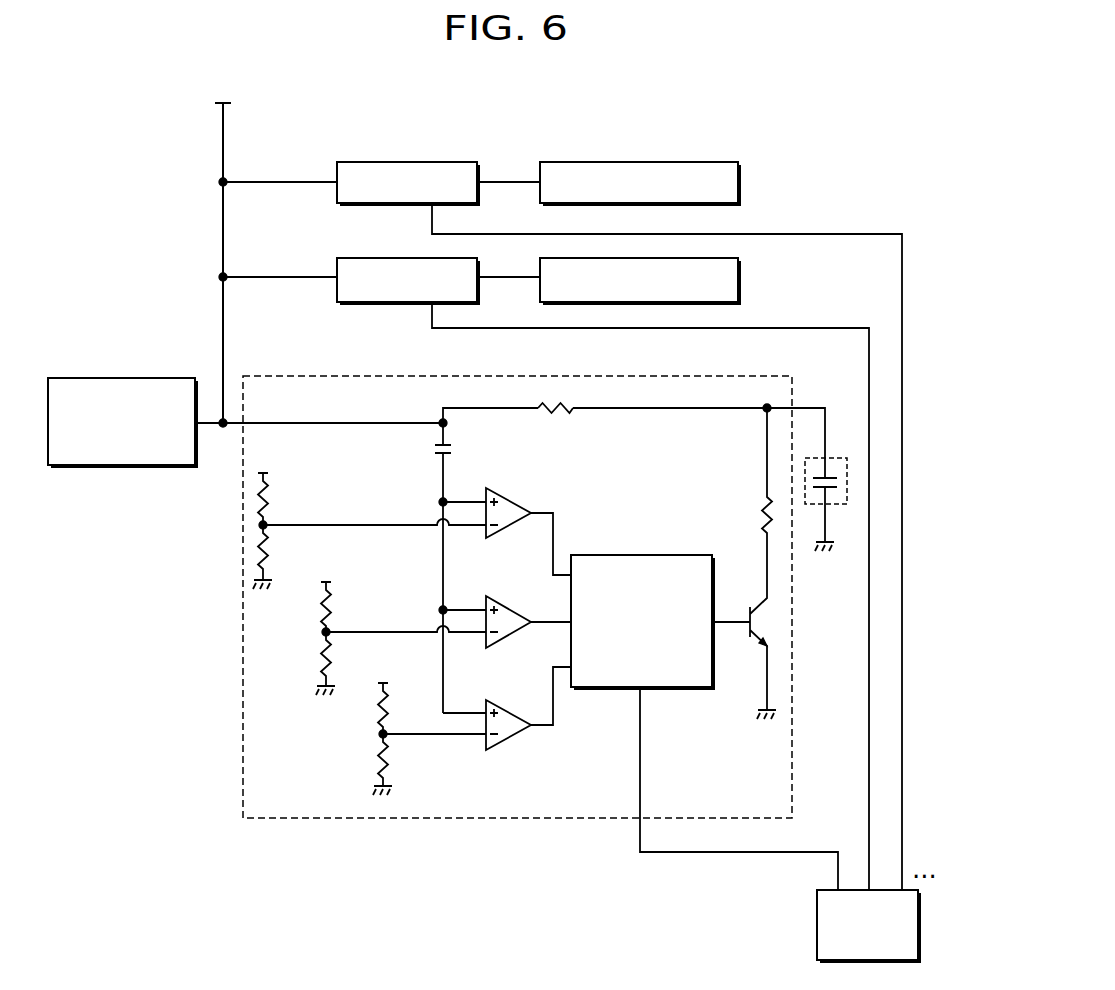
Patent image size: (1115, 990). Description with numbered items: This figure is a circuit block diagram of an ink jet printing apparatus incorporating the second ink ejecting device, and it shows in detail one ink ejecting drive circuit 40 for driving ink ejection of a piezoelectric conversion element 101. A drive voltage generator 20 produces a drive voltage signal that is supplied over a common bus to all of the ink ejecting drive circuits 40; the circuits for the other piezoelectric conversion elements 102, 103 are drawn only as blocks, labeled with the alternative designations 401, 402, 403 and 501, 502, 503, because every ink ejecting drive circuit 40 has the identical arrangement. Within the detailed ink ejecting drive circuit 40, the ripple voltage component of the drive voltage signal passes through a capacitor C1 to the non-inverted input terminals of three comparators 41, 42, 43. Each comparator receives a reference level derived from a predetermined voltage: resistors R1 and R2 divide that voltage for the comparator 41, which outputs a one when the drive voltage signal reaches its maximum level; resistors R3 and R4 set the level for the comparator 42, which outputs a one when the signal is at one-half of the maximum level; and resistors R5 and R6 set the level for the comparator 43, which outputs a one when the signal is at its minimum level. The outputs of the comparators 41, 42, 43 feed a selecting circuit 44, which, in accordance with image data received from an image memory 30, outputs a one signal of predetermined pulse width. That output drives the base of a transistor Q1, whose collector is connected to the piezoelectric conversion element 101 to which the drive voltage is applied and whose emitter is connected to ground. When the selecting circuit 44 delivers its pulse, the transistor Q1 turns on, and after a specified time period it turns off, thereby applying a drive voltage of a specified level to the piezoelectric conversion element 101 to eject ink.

The drive voltage generator 20 is at (159, 378).
The image memory 30 is at (817, 924).
The ink ejecting drive circuit 40 is at (553, 504).
The drive circuit 401 is at (553, 609).
The drive circuit 402 is at (373, 258).
The drive circuit 403 is at (373, 161).
The drive circuit 501 is at (256, 376).
The drive circuit 502 is at (337, 266).
The drive circuit 503 is at (337, 170).
The comparator 41 is at (516, 499).
The comparator 42 is at (516, 607).
The comparator 43 is at (516, 715).
The selecting circuit 44 is at (630, 555).
The piezoelectric conversion element 101 is at (841, 458).
The piezoelectric conversion element 102 is at (712, 258).
The piezoelectric conversion element 103 is at (719, 162).
The capacitor C1 is at (466, 568).
The resistor R1 is at (277, 481).
The resistor R2 is at (280, 557).
The resistor R3 is at (340, 589).
The resistor R4 is at (343, 663).
The resistor R5 is at (397, 694).
The resistor R6 is at (400, 764).
The transistor Q1 is at (744, 563).